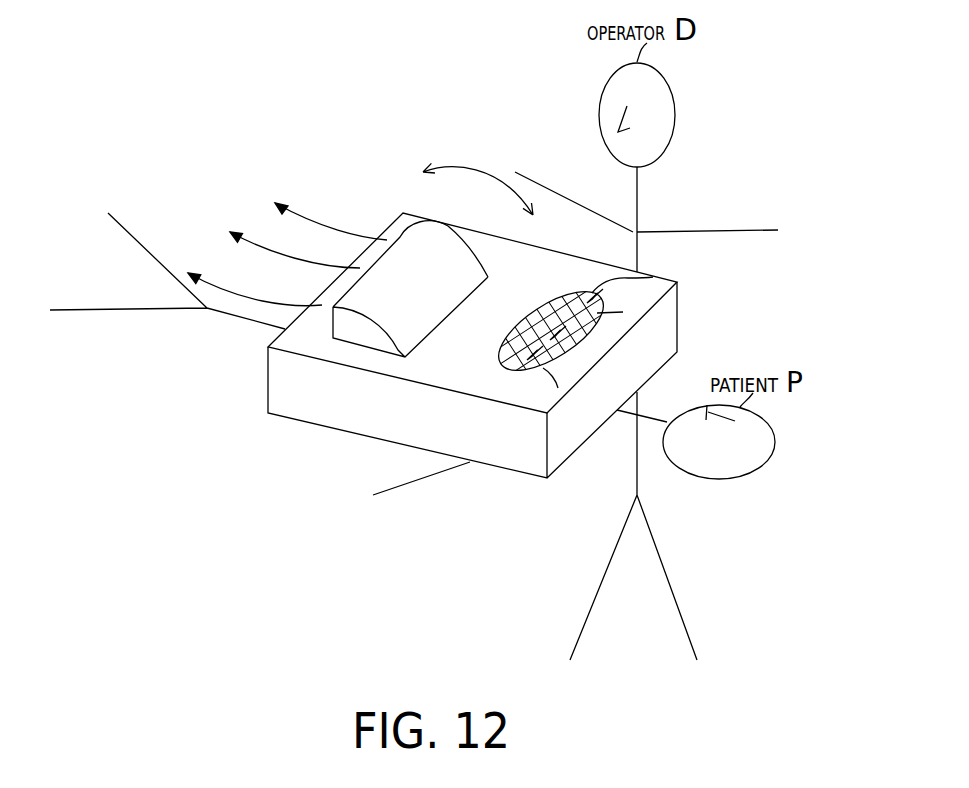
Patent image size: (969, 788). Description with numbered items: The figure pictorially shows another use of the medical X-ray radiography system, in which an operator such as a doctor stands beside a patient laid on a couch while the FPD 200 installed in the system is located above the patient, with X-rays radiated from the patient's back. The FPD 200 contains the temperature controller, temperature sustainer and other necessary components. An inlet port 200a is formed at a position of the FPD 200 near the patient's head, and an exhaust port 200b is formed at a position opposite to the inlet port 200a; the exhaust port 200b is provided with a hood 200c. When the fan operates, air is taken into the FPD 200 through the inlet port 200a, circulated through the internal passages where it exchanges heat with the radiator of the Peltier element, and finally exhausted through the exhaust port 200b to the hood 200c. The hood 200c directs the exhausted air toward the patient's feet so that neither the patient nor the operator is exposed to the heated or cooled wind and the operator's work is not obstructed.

The FPD 200 is at (283, 417).
The inlet port 200a is at (502, 366).
The exhaust port 200b is at (375, 262).
The hood 200c is at (443, 252).